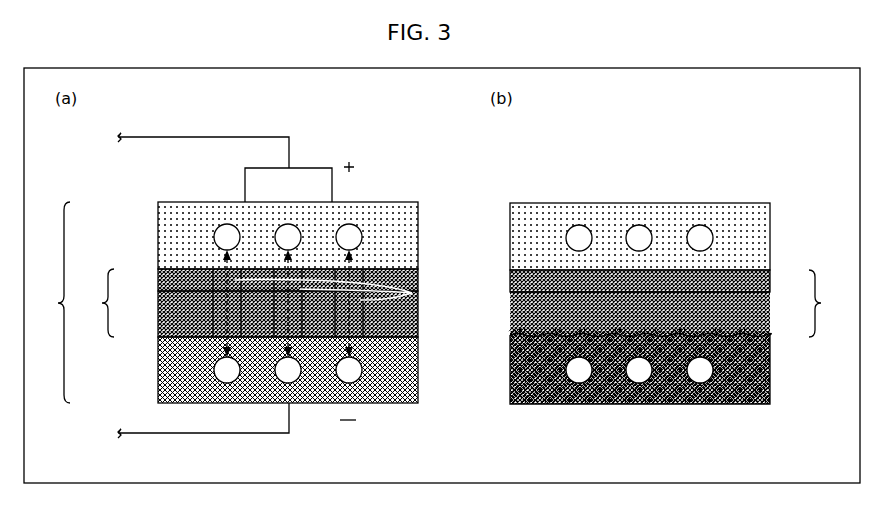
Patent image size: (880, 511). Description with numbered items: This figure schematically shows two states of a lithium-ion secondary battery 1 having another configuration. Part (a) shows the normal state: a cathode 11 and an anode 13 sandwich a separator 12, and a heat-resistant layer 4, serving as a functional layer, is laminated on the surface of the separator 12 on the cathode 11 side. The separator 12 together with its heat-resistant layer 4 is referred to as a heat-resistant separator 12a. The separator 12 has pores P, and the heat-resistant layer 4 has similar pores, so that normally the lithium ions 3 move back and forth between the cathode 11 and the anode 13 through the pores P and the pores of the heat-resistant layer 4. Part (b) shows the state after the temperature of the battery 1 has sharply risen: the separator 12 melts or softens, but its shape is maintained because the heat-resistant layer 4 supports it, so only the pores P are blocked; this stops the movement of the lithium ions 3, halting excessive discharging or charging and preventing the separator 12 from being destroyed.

The lithium-ion secondary battery 1 is at (57, 302).
The lithium ions 3 is at (349, 228).
The heat-resistant layer 4 is at (159, 279).
The cathode 11 is at (159, 237).
The separator 12 is at (159, 319).
The heat-resistant separator 12a is at (461, 303).
The anode 13 is at (159, 372).
The pores P is at (412, 294).